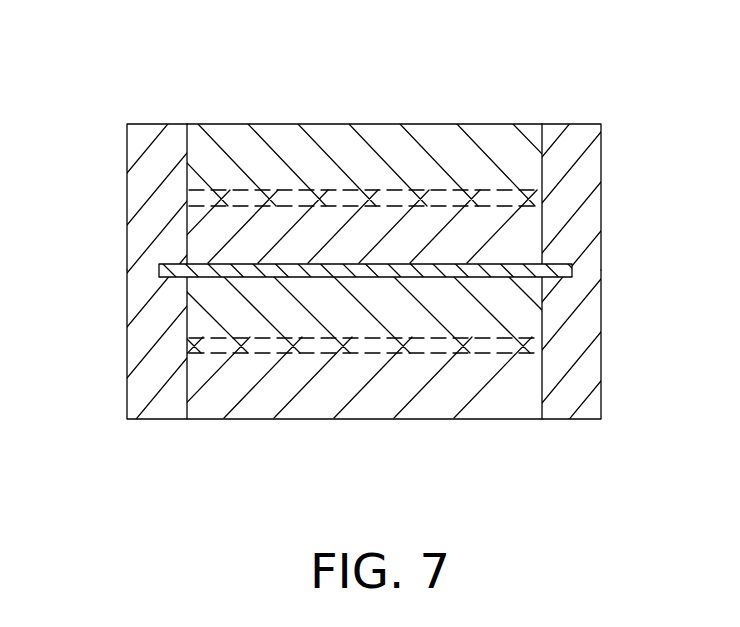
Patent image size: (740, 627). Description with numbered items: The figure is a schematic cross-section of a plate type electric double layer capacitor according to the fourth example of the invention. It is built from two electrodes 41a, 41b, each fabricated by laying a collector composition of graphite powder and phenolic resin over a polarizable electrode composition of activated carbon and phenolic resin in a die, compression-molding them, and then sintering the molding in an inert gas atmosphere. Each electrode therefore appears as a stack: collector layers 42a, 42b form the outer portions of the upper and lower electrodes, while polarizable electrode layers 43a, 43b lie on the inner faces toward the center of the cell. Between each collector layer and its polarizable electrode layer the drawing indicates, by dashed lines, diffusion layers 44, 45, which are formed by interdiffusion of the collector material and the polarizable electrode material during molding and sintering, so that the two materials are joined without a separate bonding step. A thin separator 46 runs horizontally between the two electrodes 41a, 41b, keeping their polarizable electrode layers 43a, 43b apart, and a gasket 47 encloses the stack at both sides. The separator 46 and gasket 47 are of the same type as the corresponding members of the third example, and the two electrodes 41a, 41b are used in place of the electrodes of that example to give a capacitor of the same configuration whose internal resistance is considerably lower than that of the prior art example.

The electrode 41a is at (282, 116).
The electrode 41b is at (272, 428).
The collector layer 42a is at (392, 127).
The collector layer 42b is at (356, 398).
The polarizable electrode layer 43a is at (495, 215).
The polarizable electrode layer 43b is at (487, 322).
The diffusion layer 44 is at (433, 195).
The diffusion layer 45 is at (432, 348).
The separator 46 is at (569, 268).
The gasket 47 is at (140, 193).